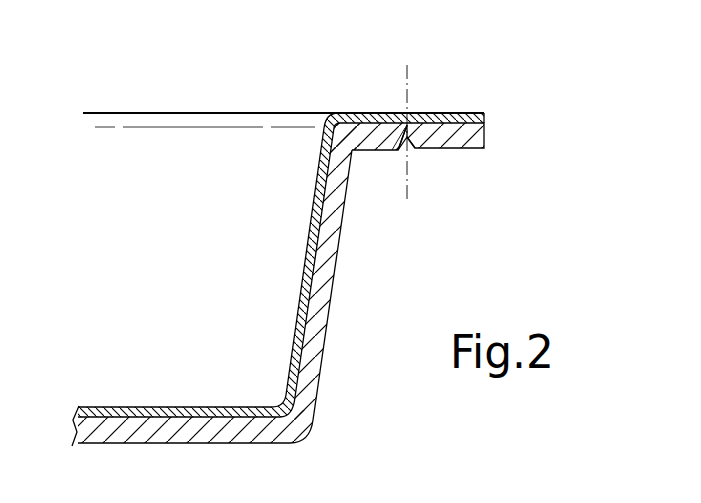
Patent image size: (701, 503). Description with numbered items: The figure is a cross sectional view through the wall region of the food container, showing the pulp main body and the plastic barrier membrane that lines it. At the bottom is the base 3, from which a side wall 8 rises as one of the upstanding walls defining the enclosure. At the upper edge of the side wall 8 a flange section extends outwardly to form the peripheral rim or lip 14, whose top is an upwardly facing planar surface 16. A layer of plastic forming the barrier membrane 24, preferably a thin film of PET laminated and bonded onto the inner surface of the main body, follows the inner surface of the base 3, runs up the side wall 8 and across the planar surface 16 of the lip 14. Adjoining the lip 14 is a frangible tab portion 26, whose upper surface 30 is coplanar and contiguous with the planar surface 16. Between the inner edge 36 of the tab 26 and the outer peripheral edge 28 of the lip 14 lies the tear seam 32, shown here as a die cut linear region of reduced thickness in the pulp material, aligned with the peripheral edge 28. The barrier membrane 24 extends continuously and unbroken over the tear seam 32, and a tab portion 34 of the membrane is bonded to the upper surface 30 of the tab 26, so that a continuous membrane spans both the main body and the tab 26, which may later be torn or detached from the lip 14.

The base 3 is at (162, 423).
The side wall 8 is at (323, 255).
The peripheral rim or lip 14 is at (330, 112).
The upwardly facing planar surface 16 is at (388, 115).
The barrier membrane 24 is at (358, 113).
The tab portion 26 is at (450, 137).
The peripheral edge of the lip 28 is at (407, 112).
The upper surface of the tab 30 is at (483, 116).
The tear seam 32 is at (413, 152).
The tab portion of the barrier membrane 34 is at (440, 113).
The inner edge of the tab 36 is at (402, 138).